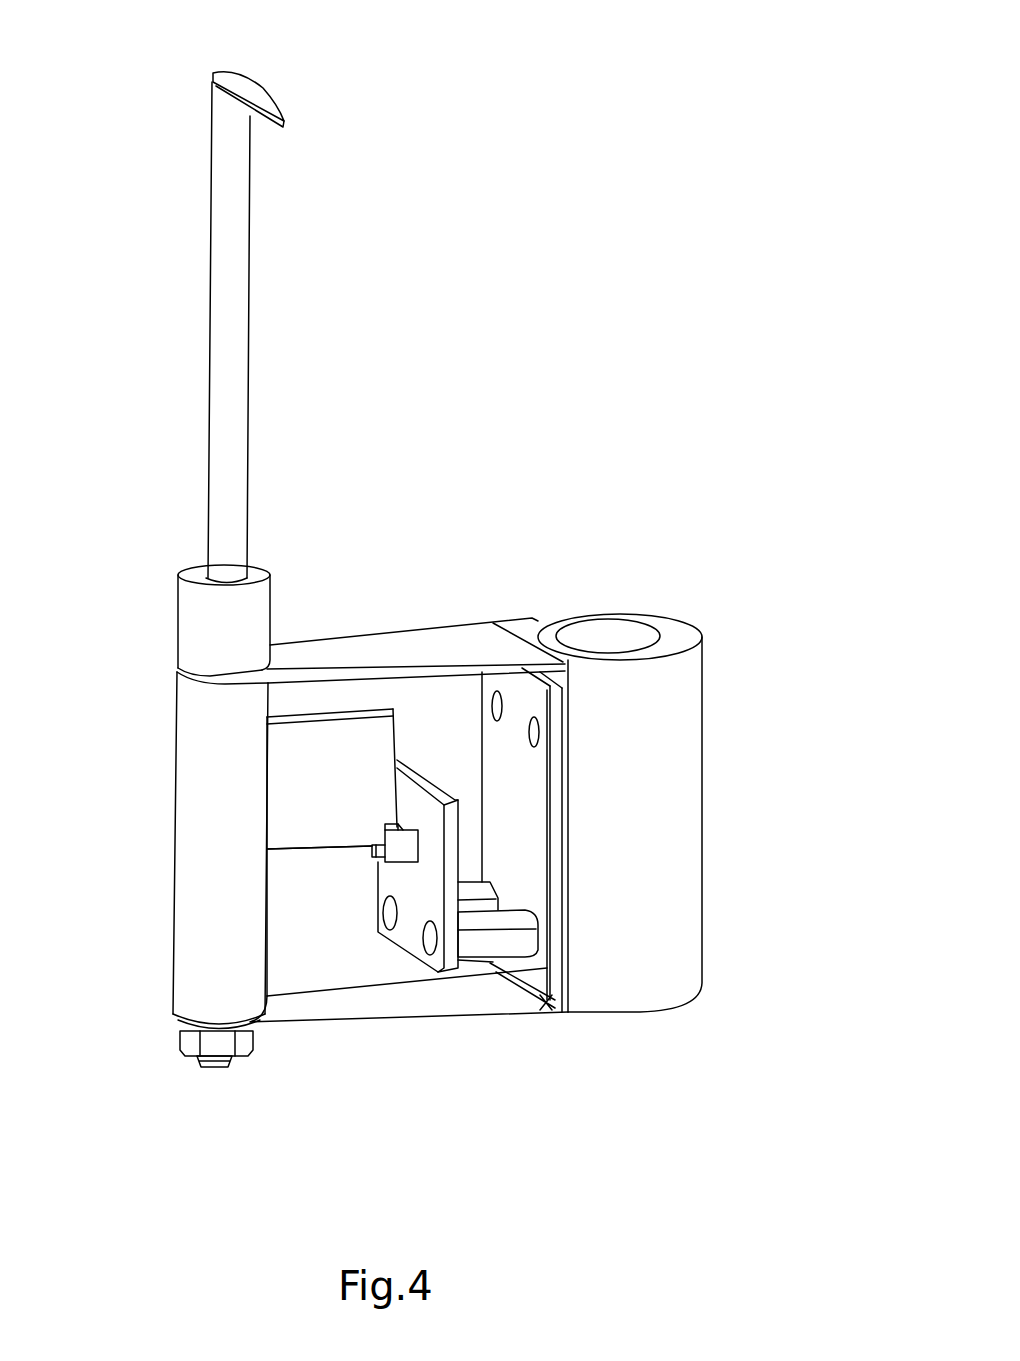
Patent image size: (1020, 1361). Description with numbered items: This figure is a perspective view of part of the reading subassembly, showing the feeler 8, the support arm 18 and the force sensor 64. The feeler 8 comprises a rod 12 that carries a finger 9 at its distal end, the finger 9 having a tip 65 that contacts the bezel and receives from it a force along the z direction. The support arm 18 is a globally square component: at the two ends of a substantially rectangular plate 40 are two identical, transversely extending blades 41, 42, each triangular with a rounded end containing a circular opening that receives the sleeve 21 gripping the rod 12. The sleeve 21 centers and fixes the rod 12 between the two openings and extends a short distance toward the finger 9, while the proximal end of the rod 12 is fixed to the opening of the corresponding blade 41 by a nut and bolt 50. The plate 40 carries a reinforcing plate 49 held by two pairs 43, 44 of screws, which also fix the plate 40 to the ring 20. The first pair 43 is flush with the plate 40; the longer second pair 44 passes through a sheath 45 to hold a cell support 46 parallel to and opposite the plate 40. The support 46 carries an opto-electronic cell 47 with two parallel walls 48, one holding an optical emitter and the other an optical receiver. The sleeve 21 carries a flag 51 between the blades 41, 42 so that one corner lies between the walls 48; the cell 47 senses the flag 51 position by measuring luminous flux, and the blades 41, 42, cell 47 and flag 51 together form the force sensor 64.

The feeler 8 is at (172, 358).
The finger 9 is at (245, 88).
The rod 12 is at (227, 287).
The tip 65 is at (284, 125).
The support arm 18 is at (378, 612).
The ring 20 is at (668, 810).
The sleeve 21 is at (203, 785).
The plate 40 is at (540, 1015).
The blade 41 is at (313, 1007).
The blade 42 is at (318, 648).
The first pair of screws 43 is at (516, 700).
The second pair of screws 44 is at (408, 930).
The sheath 45 is at (477, 947).
The cell support 46 is at (417, 800).
The opto-electronic cell 47 is at (352, 873).
The walls 48 is at (397, 855).
The reinforcing plate 49 is at (530, 967).
The nut and bolt 50 is at (182, 1041).
The flag 51 is at (292, 838).
The force sensor 64 is at (362, 820).